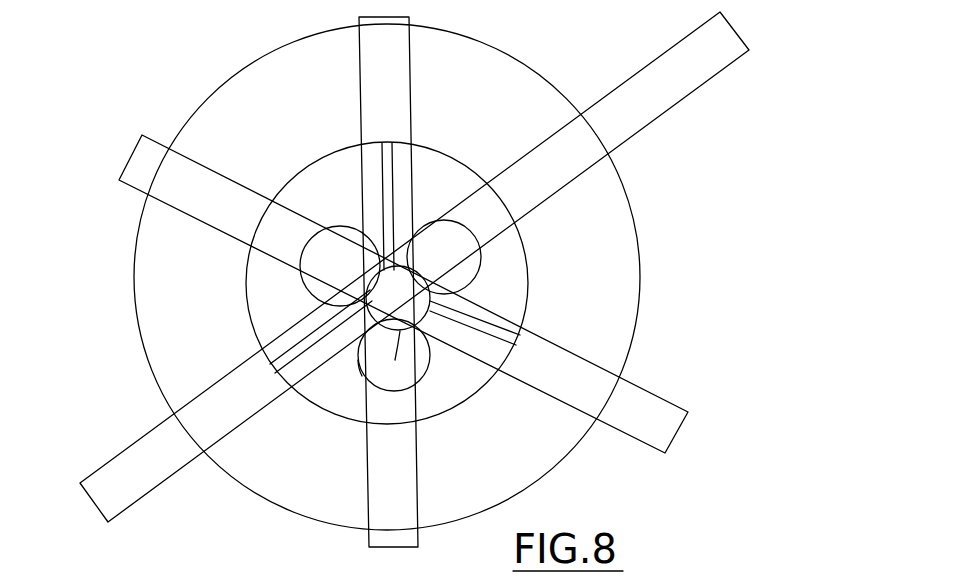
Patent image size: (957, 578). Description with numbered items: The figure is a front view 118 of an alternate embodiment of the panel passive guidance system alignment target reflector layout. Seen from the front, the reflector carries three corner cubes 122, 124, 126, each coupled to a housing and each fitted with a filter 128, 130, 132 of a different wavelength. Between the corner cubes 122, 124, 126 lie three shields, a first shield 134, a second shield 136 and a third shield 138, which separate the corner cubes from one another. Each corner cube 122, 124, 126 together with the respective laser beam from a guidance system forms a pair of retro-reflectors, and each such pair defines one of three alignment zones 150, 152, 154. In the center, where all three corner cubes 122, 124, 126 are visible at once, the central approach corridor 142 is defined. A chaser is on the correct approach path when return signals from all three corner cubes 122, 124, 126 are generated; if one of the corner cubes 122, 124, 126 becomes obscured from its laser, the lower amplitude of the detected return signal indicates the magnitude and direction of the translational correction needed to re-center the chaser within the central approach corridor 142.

The front view 118 is at (541, 21).
The corner cube 122 is at (342, 228).
The corner cube 124 is at (428, 221).
The corner cube 126 is at (431, 357).
The filter 128 is at (312, 294).
The filter 130 is at (527, 262).
The filter 132 is at (358, 358).
The first shield 134 is at (391, 144).
The second shield 136 is at (546, 340).
The third shield 138 is at (242, 367).
The central approach corridor 142 is at (395, 360).
The alignment zone 150 is at (132, 152).
The alignment zone 152 is at (358, 27).
The alignment zone 154 is at (697, 89).